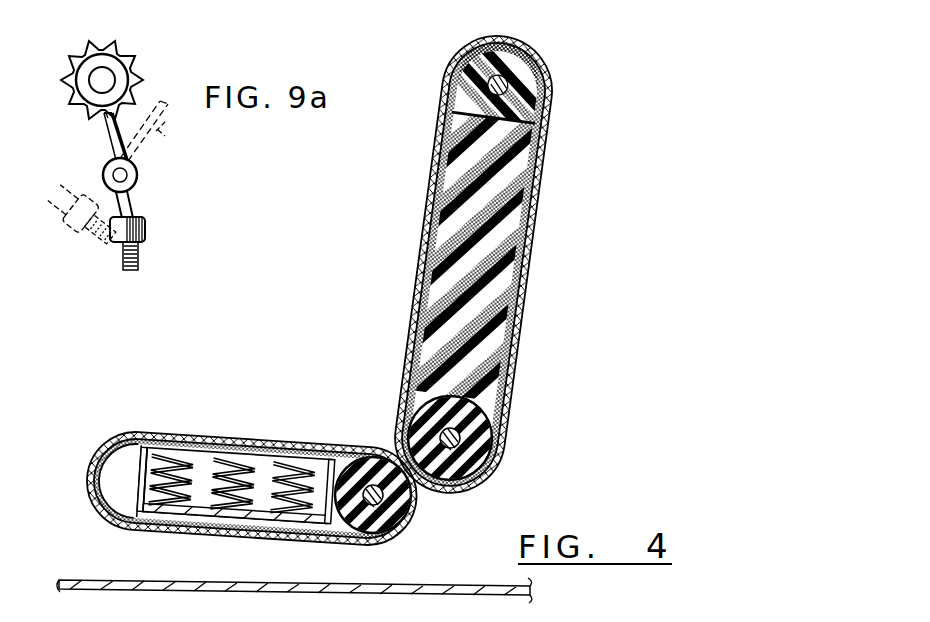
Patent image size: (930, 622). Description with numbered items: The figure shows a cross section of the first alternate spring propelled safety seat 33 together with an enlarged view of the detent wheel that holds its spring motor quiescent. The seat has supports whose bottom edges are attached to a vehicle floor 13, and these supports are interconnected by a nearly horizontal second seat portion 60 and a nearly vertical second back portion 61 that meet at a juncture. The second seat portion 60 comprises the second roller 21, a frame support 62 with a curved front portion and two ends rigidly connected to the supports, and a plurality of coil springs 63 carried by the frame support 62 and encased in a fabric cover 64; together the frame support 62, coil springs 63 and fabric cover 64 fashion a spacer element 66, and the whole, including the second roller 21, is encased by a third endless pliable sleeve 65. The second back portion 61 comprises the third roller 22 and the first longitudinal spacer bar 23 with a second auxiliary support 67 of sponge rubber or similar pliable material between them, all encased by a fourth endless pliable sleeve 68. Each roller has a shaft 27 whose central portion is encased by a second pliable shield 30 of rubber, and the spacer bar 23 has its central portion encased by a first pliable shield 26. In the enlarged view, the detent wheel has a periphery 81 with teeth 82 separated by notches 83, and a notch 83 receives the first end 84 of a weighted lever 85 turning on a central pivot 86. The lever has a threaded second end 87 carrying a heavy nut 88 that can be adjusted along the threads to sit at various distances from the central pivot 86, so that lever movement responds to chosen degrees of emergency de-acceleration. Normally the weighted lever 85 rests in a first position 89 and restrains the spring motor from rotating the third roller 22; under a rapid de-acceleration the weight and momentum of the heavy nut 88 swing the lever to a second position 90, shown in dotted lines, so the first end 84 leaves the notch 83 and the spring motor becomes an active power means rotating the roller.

In FIG. 4, the vehicle floor 13 is at (62, 580).
In FIG. 4, the second roller 21 is at (217, 476).
In FIG. 4, the third roller 22 is at (492, 466).
In FIG. 4, the first longitudinal spacer bar 23 is at (538, 278).
In FIG. 4, the first pliable shield 26 is at (547, 88).
In FIG. 4, the shaft 27 is at (398, 515).
In FIG. 4, the second pliable shield 30 is at (415, 497).
In FIG. 4, the first alternate spring propelled safety seat 33 is at (473, 264).
In FIG. 4, the second seat portion 60 is at (142, 479).
In FIG. 4, the second back portion 61 is at (543, 239).
In FIG. 4, the frame support 62 is at (237, 486).
In FIG. 4, the coil springs 63 is at (235, 514).
In FIG. 4, the fabric cover 64 is at (119, 480).
In FIG. 4, the third endless pliable sleeve 65 is at (170, 481).
In FIG. 4, the spacer element 66 is at (262, 486).
In FIG. 4, the second auxiliary support 67 is at (512, 262).
In FIG. 4, the fourth endless pliable sleeve 68 is at (473, 263).
In FIG. 9A, the periphery 81 is at (112, 52).
In FIG. 9A, the teeth 82 is at (62, 78).
In FIG. 9A, the notches 83 is at (133, 58).
In FIG. 9A, the first end 84 is at (112, 118).
In FIG. 9A, the weighted lever 85 is at (110, 123).
In FIG. 9A, the central pivot 86 is at (117, 175).
In FIG. 9A, the threaded second end 87 is at (123, 263).
In FIG. 9A, the heavy nut 88 is at (72, 253).
In FIG. 9A, the first position 89 is at (107, 118).
In FIG. 9A, the second position 90 is at (168, 140).